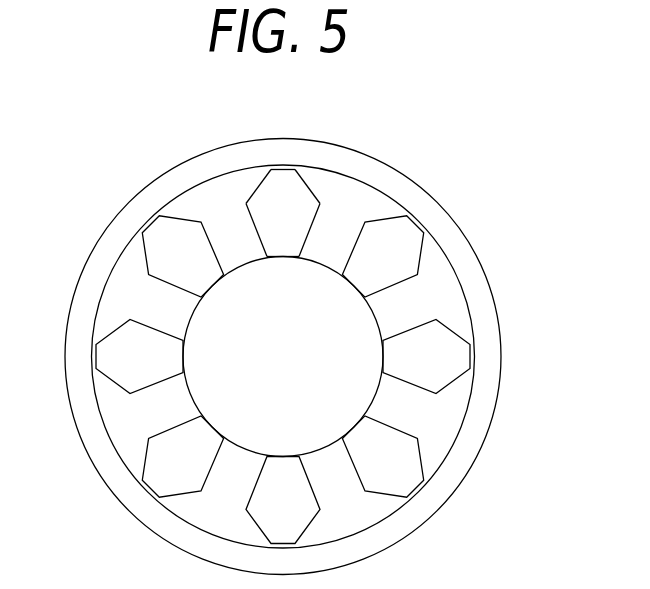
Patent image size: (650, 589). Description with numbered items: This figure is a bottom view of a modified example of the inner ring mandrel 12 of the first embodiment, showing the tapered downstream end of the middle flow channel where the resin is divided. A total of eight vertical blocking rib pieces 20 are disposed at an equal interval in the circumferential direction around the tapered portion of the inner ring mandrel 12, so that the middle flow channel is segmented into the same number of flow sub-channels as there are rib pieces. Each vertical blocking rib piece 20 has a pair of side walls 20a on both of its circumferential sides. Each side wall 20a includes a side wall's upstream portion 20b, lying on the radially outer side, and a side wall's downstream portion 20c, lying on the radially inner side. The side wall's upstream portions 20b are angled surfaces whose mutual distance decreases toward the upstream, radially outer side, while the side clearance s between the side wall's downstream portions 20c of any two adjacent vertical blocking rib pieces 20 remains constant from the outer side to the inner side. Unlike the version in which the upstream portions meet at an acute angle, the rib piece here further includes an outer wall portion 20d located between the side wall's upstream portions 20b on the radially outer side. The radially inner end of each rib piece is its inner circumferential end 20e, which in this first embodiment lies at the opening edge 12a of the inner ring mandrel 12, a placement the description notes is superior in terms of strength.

The inner ring mandrel 12 is at (475, 222).
The opening edge 12a is at (190, 318).
The vertical blocking rib piece 20 is at (255, 309).
The side wall 20a is at (307, 213).
The side wall's upstream portion 20b is at (258, 183).
The side wall's downstream portion 20c is at (247, 221).
The outer wall portion 20d is at (280, 169).
The inner circumferential end 20e is at (279, 257).
The side clearance s is at (347, 252).